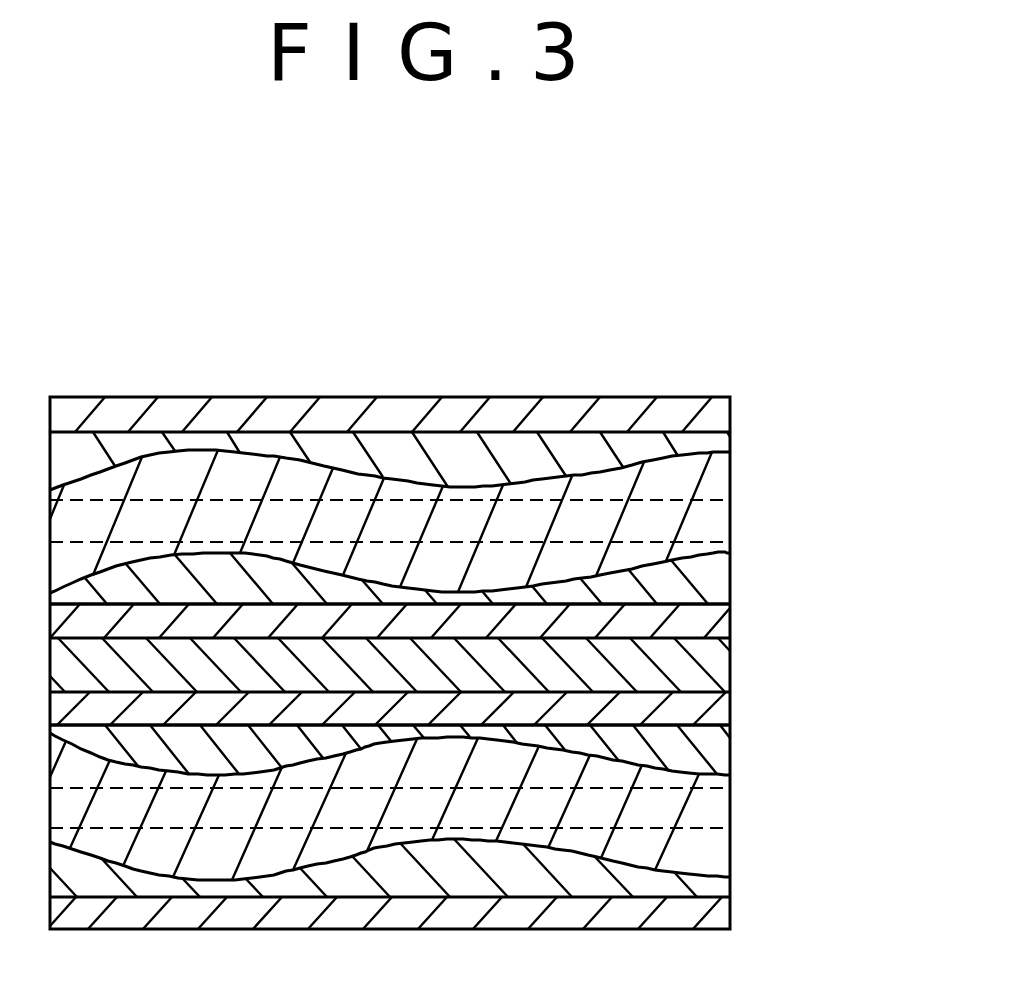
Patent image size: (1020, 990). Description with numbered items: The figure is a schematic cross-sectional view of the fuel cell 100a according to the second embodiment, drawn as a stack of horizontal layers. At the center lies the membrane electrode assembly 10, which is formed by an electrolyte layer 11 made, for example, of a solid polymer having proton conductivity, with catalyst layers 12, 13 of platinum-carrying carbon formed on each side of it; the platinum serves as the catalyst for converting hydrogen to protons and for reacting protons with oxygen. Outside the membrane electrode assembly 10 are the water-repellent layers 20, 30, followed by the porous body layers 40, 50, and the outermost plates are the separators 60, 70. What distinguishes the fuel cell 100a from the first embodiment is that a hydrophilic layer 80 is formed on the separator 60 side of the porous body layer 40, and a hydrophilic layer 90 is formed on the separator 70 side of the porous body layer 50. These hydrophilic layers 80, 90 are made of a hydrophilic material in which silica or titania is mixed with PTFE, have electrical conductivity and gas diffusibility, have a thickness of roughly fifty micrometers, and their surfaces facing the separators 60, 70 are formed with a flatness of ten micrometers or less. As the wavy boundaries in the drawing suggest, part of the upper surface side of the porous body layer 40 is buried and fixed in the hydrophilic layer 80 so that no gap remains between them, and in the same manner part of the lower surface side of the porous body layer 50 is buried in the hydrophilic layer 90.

The fuel cell 100a is at (632, 362).
The membrane electrode assembly 10 is at (845, 583).
The electrolyte layer 11 is at (730, 667).
The catalyst layer 12 is at (730, 628).
The catalyst layer 13 is at (730, 710).
The water-repellent layer 20 is at (733, 543).
The water-repellent layer 30 is at (733, 725).
The porous body layer 40 is at (730, 523).
The porous body layer 50 is at (730, 813).
The separator 60 is at (730, 417).
The separator 70 is at (730, 918).
The hydrophilic layer 80 is at (733, 432).
The hydrophilic layer 90 is at (733, 827).